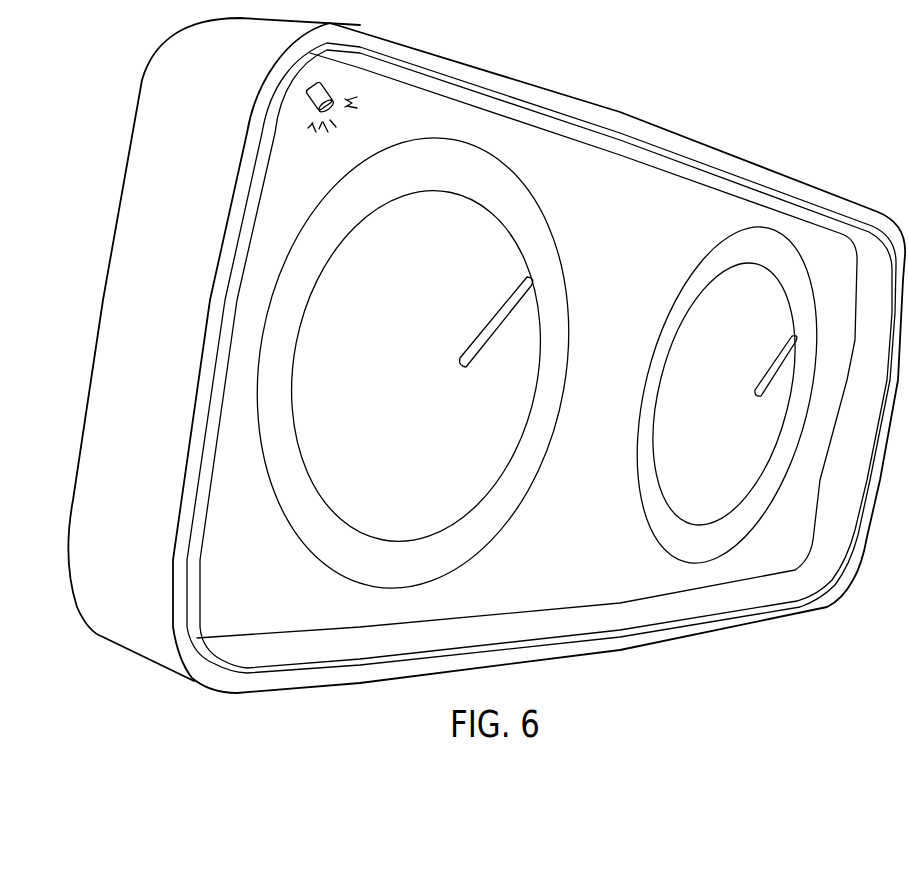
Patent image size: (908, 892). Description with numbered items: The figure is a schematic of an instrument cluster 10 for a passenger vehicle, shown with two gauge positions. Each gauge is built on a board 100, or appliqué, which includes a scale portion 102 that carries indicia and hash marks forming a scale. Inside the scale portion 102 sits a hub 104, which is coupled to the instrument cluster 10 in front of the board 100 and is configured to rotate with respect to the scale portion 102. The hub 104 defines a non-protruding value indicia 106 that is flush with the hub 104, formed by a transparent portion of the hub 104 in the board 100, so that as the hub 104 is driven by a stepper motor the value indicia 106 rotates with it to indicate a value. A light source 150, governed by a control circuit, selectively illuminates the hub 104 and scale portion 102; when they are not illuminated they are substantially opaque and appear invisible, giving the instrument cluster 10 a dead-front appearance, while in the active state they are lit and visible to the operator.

The instrument cluster 10 is at (744, 127).
The board 100 is at (467, 485).
The scale portion 102 is at (530, 208).
The hub 104 is at (390, 421).
The value indicia 106 is at (488, 337).
The light source 150 is at (308, 100).